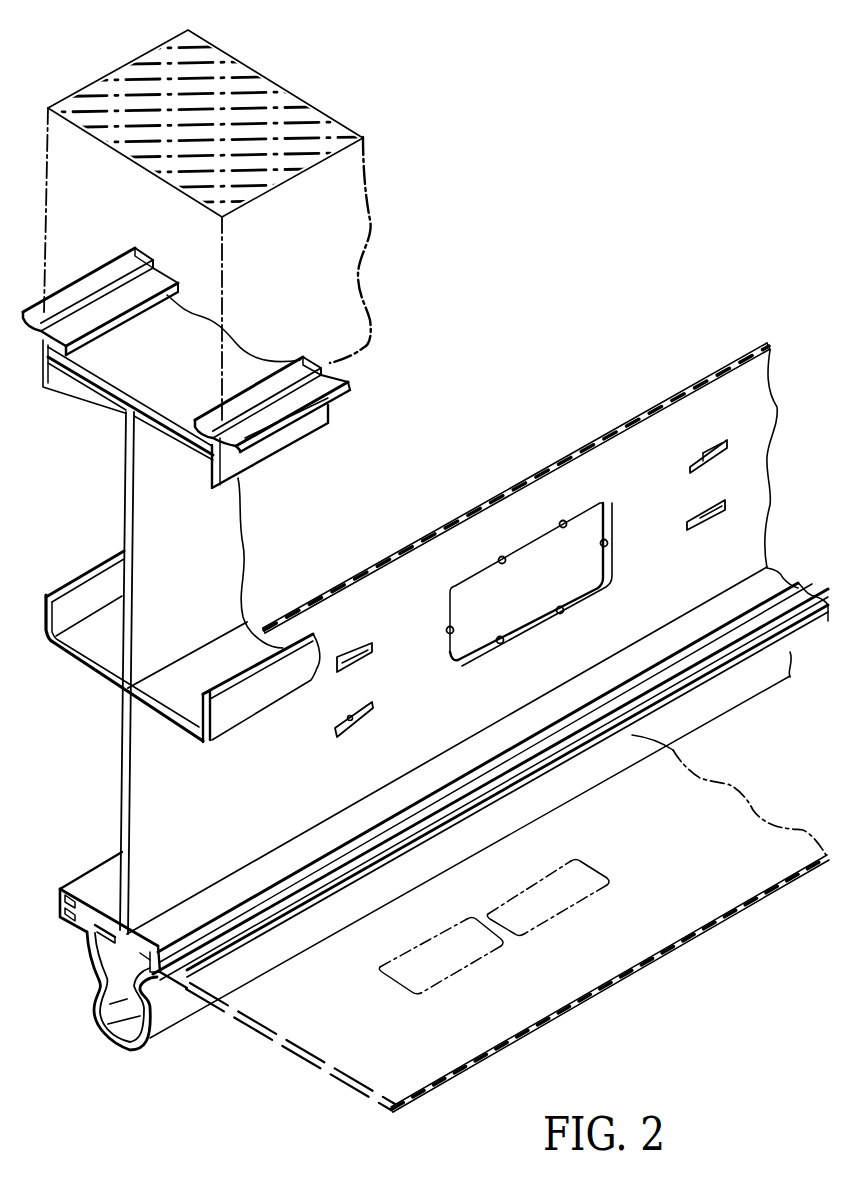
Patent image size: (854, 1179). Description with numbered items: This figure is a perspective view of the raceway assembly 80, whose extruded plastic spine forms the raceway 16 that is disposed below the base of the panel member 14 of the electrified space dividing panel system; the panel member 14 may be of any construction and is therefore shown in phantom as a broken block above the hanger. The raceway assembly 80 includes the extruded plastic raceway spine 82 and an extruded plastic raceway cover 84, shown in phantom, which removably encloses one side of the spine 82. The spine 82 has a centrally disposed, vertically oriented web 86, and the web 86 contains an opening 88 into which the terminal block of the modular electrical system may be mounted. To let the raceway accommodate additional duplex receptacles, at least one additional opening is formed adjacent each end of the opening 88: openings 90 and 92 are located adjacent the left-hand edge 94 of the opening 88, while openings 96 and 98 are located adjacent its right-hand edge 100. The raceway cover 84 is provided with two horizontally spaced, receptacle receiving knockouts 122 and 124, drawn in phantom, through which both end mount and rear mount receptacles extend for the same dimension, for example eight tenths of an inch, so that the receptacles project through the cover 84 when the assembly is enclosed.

The panel member 14 is at (274, 89).
The raceway 16 is at (67, 762).
The raceway assembly 80 is at (475, 638).
The raceway spine 82 is at (745, 466).
The raceway cover 84 is at (507, 931).
The web 86 is at (745, 543).
The opening 88 is at (530, 563).
The opening 90 is at (347, 647).
The opening 92 is at (343, 713).
The left-hand edge 94 is at (450, 643).
The opening 96 is at (717, 445).
The opening 98 is at (713, 530).
The right-hand edge 100 is at (613, 557).
The receptacle receiving knockout 122 is at (558, 871).
The receptacle receiving knockout 124 is at (421, 972).